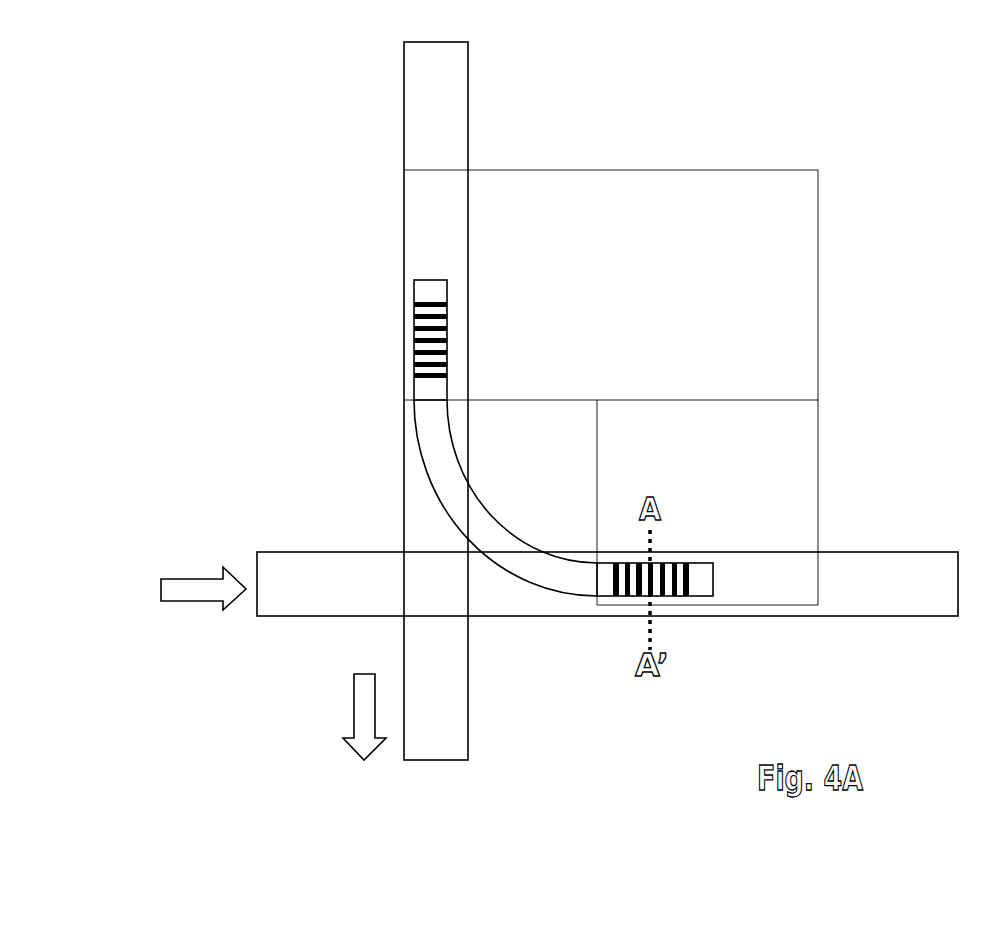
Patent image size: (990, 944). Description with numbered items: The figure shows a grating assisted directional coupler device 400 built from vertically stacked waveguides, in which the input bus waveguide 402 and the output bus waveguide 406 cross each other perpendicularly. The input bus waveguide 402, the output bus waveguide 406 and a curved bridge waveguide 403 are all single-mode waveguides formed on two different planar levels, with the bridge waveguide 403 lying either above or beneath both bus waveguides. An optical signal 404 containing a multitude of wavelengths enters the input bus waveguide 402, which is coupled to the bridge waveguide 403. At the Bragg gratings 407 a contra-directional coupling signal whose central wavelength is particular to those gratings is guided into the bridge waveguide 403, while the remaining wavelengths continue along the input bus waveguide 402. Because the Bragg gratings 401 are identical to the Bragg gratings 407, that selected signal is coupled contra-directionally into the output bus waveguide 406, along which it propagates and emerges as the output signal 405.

The optical interconnect structure 400 is at (824, 160).
The Bragg gratings 401 is at (420, 330).
The input bus waveguide 402 is at (800, 583).
The bridge waveguide 403 is at (457, 497).
The optical signal 404 is at (213, 590).
The output signal 405 is at (363, 705).
The output bus waveguide 406 is at (430, 182).
The Bragg gratings 407 is at (700, 572).